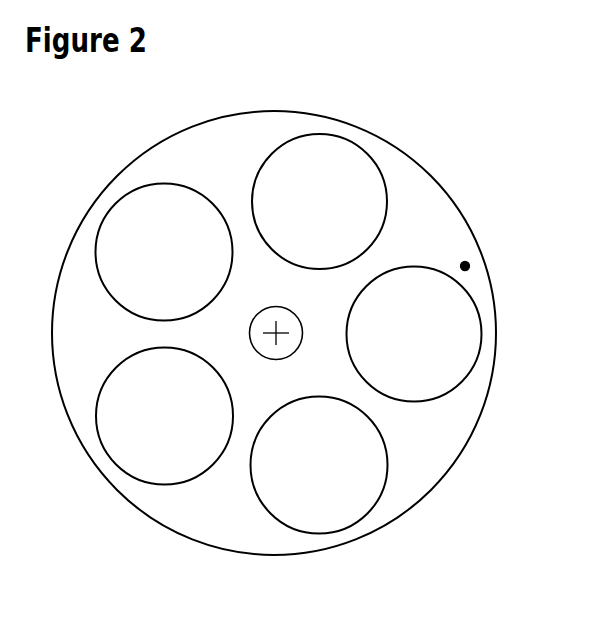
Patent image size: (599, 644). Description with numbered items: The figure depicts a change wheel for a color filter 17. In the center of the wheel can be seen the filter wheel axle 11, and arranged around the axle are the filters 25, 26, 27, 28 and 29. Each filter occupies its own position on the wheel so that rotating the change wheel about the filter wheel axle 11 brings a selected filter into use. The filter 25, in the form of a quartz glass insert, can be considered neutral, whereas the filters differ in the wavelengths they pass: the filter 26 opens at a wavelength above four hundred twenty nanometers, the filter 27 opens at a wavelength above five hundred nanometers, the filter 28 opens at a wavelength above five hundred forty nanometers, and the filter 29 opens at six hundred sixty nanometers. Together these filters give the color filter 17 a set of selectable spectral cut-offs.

The color filter 17 is at (427, 218).
The filter 25 is at (416, 333).
The filter 26 is at (317, 202).
The filter 27 is at (162, 252).
The filter wheel axle 11 is at (167, 412).
The filter 29 is at (317, 468).
The filter 28 is at (273, 338).